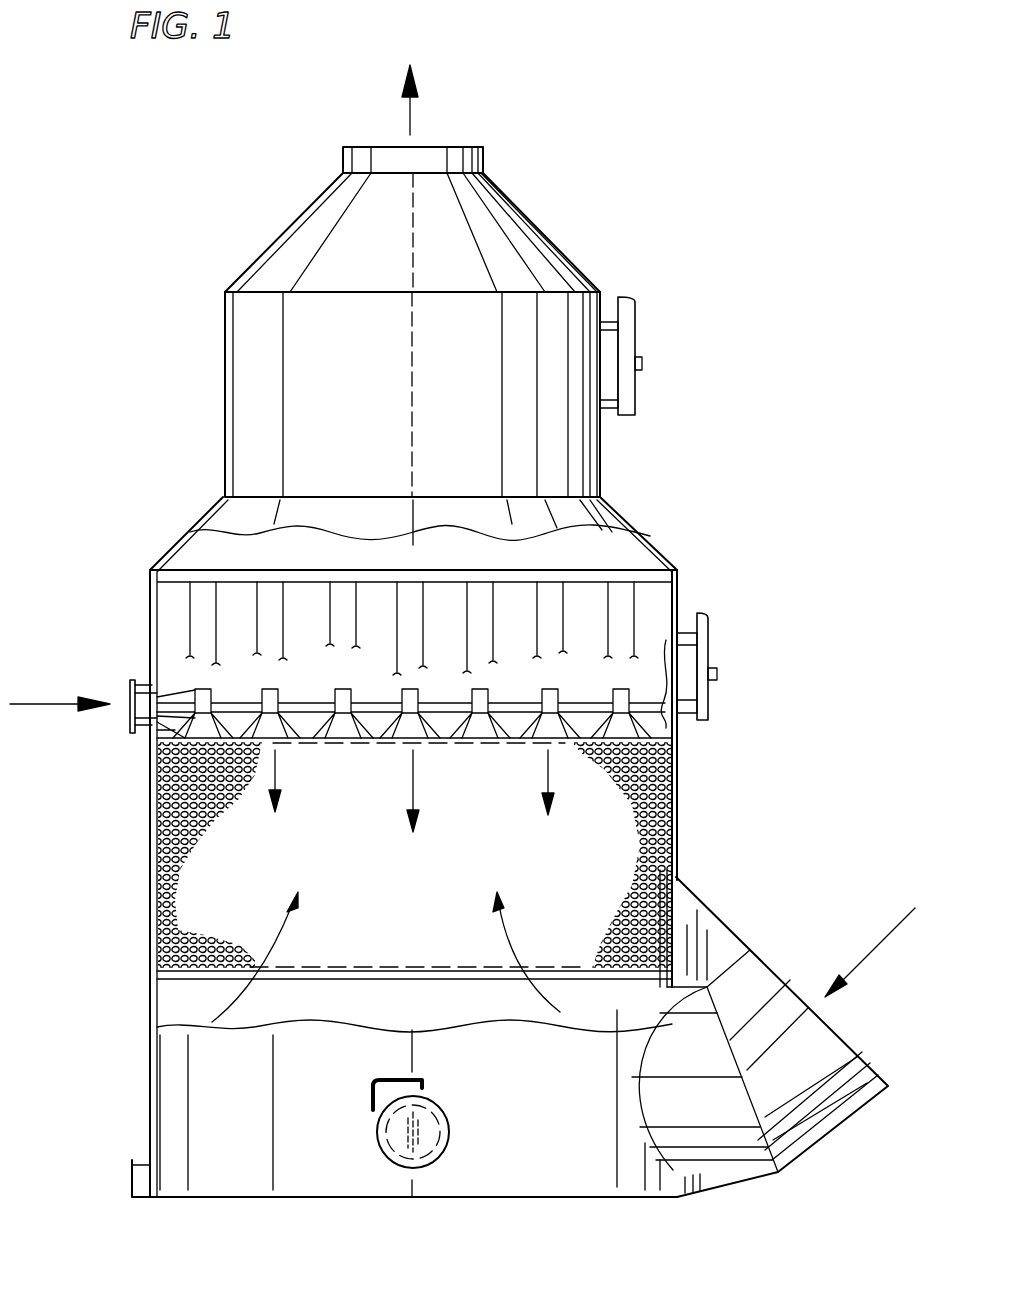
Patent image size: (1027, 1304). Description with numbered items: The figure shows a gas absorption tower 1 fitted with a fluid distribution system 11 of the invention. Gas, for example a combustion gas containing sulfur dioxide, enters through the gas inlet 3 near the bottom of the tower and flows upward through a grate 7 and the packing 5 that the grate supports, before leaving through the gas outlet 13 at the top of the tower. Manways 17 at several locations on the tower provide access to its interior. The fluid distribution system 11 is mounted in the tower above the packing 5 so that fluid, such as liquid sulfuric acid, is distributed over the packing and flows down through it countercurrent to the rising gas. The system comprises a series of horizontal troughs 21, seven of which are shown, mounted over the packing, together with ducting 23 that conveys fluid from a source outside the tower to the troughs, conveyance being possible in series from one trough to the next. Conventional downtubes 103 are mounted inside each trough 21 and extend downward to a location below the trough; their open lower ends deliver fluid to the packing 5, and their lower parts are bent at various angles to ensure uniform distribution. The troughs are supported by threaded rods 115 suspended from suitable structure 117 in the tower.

The gas absorption tower 1 is at (523, 166).
The gas inlet 3 is at (838, 1112).
The packing 5 is at (672, 795).
The grate 7 is at (297, 983).
The fluid distribution system 11 is at (186, 692).
The gas outlet 13 is at (372, 148).
The manways 17 is at (637, 333).
The horizontal troughs 21 is at (401, 701).
The ducting 23 is at (158, 727).
The downtubes 103 is at (645, 730).
The threaded rods 115 is at (188, 606).
The structure 117 is at (622, 570).